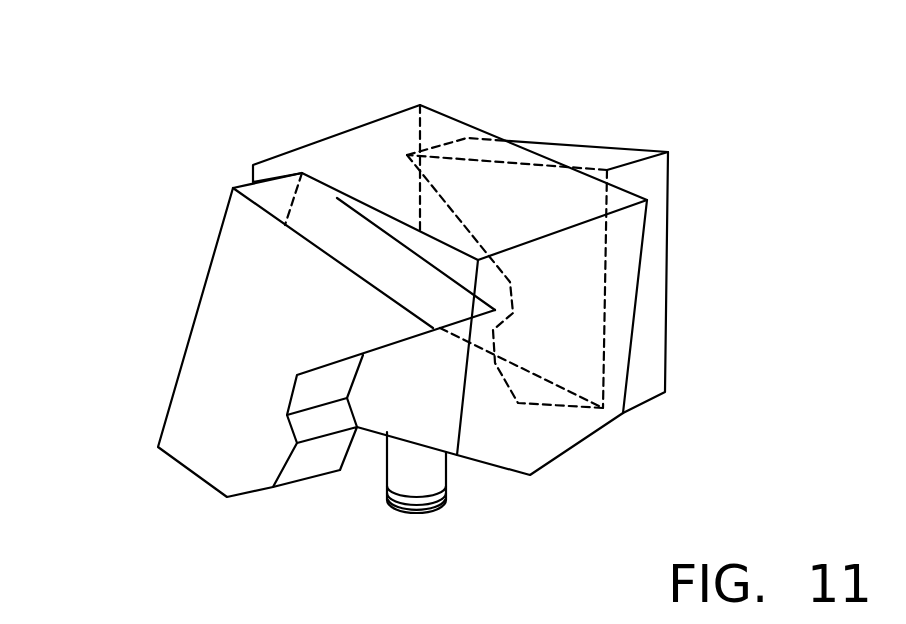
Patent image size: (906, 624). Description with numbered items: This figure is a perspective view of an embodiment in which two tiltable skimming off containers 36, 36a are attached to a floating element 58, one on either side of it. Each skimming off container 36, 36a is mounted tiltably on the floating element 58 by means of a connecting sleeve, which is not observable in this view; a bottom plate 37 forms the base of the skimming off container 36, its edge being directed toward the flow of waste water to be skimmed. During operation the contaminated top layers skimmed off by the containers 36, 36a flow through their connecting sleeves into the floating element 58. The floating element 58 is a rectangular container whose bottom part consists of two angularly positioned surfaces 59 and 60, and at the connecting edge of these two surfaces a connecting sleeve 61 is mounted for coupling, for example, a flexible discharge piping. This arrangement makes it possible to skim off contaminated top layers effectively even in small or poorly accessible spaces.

The skimming off container 36 is at (197, 317).
The skimming off container 36a is at (670, 218).
The bottom plate 37 is at (352, 238).
The floating element 58 is at (457, 118).
The angularly positioned surface 59 is at (563, 428).
The angularly positioned surface 60 is at (495, 450).
The connecting sleeve 61 is at (393, 512).